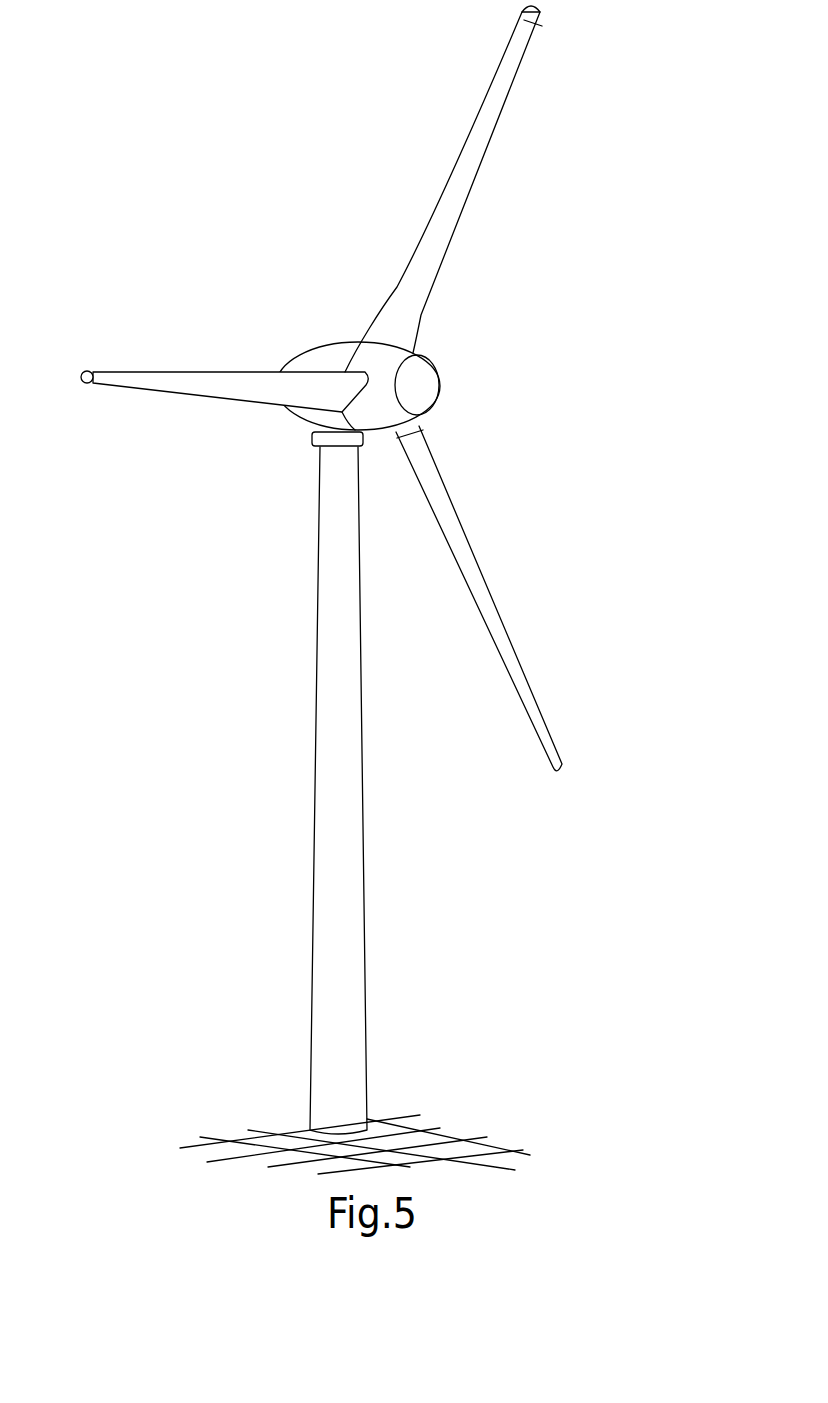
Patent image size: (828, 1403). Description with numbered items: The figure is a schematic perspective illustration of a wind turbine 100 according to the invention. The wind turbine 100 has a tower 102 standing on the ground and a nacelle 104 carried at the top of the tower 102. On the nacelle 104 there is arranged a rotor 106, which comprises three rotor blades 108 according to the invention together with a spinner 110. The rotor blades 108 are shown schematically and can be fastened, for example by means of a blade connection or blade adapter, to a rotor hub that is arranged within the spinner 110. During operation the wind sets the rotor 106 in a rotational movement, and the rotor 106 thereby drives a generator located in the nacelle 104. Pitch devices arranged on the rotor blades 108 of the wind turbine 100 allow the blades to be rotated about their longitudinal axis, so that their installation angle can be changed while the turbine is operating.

The wind turbine 100 is at (372, 590).
The tower 102 is at (345, 895).
The nacelle 104 is at (333, 361).
The rotor 106 is at (372, 388).
The rotor blades 108 is at (155, 372).
The spinner 110 is at (422, 387).